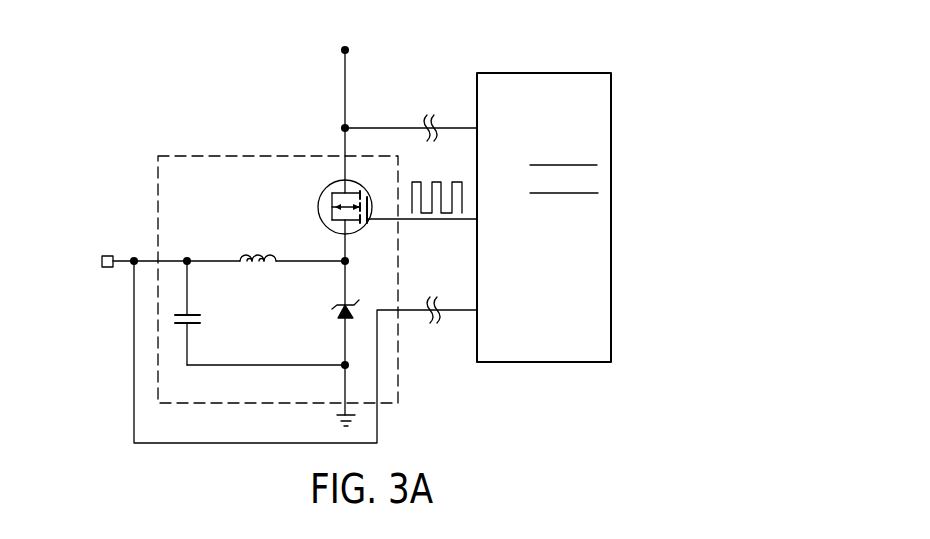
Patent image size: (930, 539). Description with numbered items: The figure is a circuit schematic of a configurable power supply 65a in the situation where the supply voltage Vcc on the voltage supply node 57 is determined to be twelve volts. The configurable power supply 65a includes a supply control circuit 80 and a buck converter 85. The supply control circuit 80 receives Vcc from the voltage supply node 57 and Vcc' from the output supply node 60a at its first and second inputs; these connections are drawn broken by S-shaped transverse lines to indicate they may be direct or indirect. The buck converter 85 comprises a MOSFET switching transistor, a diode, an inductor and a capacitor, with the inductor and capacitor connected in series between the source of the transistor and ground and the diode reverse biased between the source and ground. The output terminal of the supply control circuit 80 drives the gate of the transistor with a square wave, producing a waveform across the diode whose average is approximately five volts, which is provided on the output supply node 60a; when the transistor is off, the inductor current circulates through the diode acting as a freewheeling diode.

The voltage supply node 57 is at (349, 51).
The supply control circuit 80 is at (565, 73).
The buck converter 85 is at (199, 156).
The output supply node 60a is at (95, 262).
The configurable power supply 65a is at (163, 473).